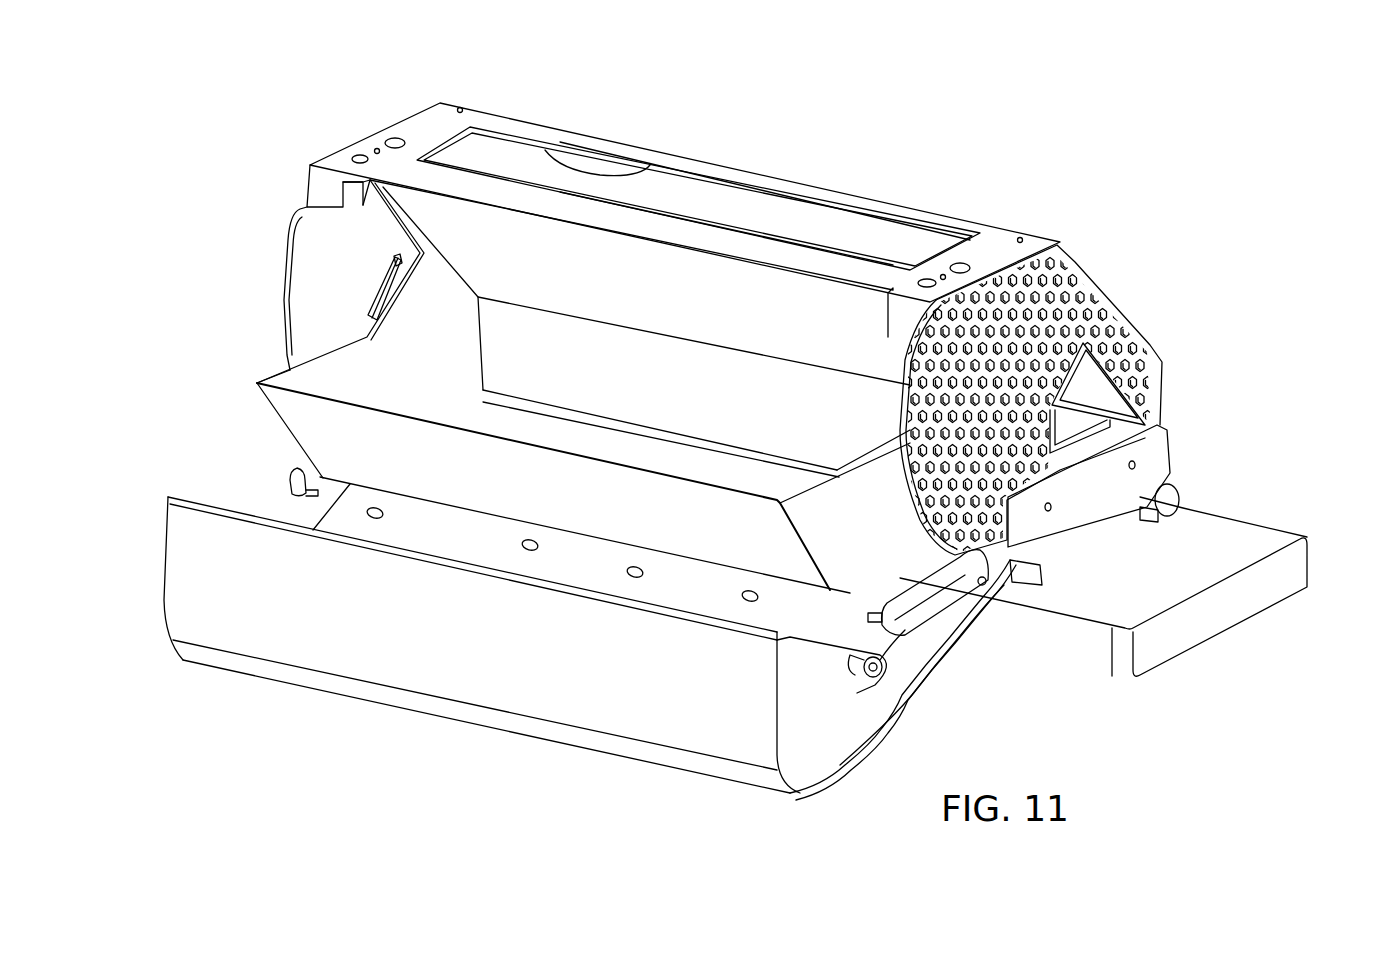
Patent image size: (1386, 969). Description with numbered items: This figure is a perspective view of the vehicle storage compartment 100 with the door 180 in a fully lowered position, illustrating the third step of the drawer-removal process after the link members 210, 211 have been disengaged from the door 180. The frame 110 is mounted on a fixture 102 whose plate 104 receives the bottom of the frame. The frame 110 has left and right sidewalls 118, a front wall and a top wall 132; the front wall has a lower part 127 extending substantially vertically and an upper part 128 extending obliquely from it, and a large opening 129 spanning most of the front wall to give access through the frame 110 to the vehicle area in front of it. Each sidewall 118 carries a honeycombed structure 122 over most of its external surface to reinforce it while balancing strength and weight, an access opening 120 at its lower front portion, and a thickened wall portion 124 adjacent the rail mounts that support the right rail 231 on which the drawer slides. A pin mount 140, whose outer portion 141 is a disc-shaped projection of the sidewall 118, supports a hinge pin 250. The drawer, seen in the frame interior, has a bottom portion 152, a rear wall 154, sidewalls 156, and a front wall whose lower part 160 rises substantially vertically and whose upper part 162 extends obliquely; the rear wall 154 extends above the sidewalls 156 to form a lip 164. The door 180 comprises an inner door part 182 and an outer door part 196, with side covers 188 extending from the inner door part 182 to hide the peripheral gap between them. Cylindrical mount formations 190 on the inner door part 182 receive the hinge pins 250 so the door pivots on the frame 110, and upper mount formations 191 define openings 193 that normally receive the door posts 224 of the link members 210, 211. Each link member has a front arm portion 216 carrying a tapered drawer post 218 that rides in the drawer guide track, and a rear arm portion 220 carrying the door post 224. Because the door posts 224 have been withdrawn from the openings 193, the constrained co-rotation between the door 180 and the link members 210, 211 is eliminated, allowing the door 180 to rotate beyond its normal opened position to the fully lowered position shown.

The storage compartment 100 is at (258, 145).
The fixture 102 is at (1300, 545).
The plate 104 is at (1290, 595).
The frame 110 is at (420, 118).
The sidewall 118 is at (286, 242).
The access opening 120 is at (1148, 412).
The honeycombed structure 122 is at (1072, 262).
The thickened wall portion 124 is at (1165, 432).
The lower part of front wall 127 is at (1140, 420).
The upper part of front wall 128 is at (615, 140).
The opening of front wall 129 is at (555, 152).
The top wall 132 is at (995, 235).
The pin mount 140 is at (1020, 583).
The outer portion of pin mount 141 is at (1025, 573).
The bottom portion of drawer 152 is at (543, 486).
The rear wall of drawer 154 is at (283, 418).
The sidewall of drawer 156 is at (875, 467).
The lower part of drawer front wall 160 is at (661, 423).
The upper part of drawer front wall 162 is at (694, 332).
The lip 164 is at (260, 382).
The door 180 is at (172, 600).
The inner door part 182 is at (822, 770).
The side cover 188 is at (798, 787).
The mount formation 190 is at (915, 565).
The upper mount formation 191 is at (865, 658).
The opening of upper mount formation 193 is at (890, 705).
The outer door part 196 is at (236, 640).
The left link member 210 is at (372, 318).
The right link member 211 is at (920, 640).
The front arm portion 216 is at (382, 292).
The drawer post 218 is at (393, 262).
The rear arm portion 220 is at (290, 474).
The door post 224 is at (304, 492).
The right rail 231 is at (1172, 465).
The hinge pin 250 is at (985, 595).